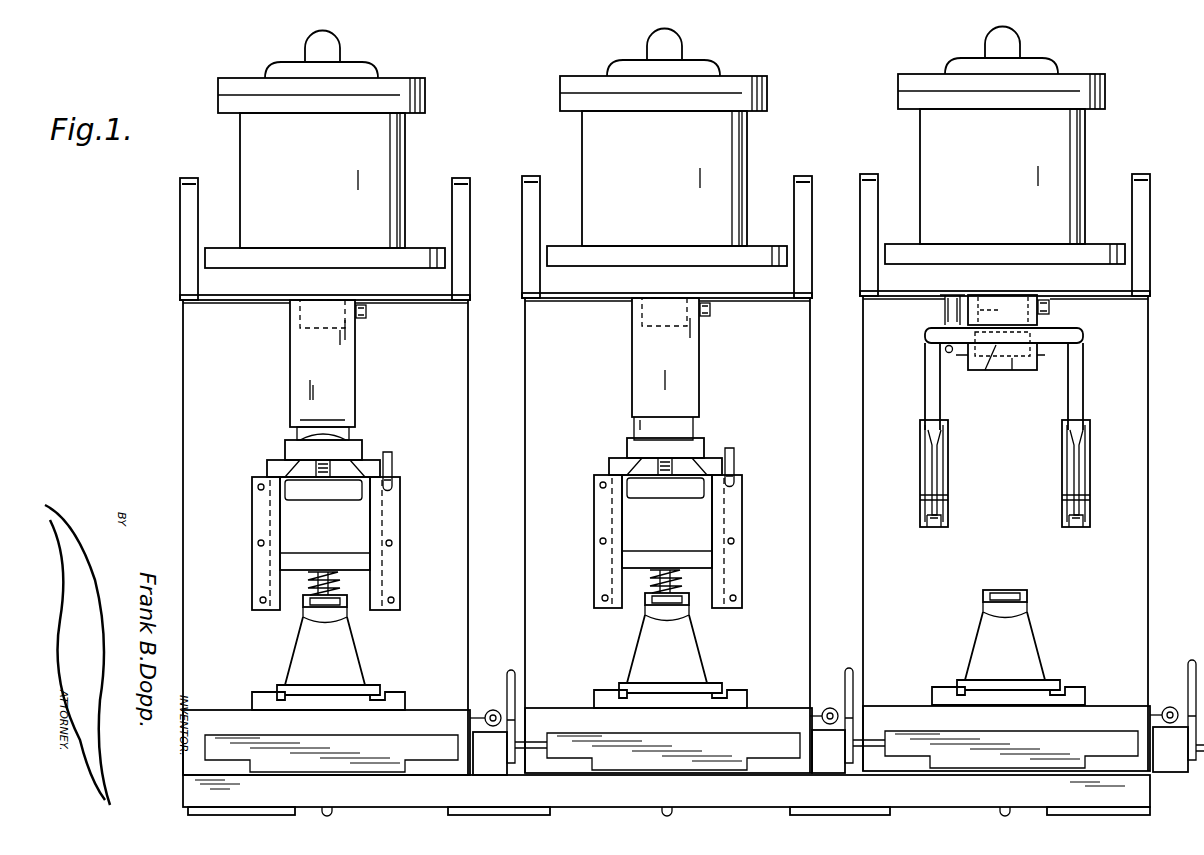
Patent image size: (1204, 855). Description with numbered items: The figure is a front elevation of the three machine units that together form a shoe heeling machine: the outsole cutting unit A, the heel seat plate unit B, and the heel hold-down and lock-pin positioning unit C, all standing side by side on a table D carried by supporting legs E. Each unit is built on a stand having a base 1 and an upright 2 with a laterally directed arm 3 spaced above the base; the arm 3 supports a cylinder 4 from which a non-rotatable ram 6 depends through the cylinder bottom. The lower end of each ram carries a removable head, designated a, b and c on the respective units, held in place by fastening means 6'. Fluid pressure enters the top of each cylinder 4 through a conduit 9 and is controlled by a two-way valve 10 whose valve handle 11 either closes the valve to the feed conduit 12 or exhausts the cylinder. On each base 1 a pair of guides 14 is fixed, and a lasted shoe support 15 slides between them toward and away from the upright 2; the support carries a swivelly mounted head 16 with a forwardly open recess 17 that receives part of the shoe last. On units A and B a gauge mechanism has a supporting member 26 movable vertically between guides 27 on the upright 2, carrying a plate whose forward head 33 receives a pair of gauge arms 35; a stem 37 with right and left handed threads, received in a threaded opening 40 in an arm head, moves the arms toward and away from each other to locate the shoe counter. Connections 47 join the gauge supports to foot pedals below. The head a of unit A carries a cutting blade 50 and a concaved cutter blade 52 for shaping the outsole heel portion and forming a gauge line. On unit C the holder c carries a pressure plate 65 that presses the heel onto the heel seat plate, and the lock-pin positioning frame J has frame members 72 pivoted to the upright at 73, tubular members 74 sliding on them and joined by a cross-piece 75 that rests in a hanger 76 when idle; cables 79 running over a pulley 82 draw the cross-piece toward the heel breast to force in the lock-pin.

The base 1 is at (207, 718).
The upright 2 is at (665, 474).
The laterally directed arm 3 is at (665, 267).
The cylinder 4 is at (240, 143).
The ram 6 is at (665, 282).
The fastening means 6' is at (713, 317).
The conduit 9 is at (485, 712).
The two-way valve 10 is at (830, 751).
The valve handle 11 is at (511, 670).
The feed conduit 12 is at (547, 746).
The guides 14 is at (260, 700).
The lasted shoe support 15 is at (665, 648).
The head 16 is at (305, 615).
The recess 17 is at (347, 605).
The supporting member 26 is at (496, 522).
The guides 27 is at (255, 548).
The head 33 is at (363, 450).
The gauge arms 35 is at (277, 468).
The stem 37 is at (393, 470).
The screw threaded opening 40 is at (340, 577).
The connections 47 is at (337, 588).
The cutting blade 50 is at (297, 432).
The concaved cutter blade 52 is at (333, 438).
The pressure plate 65 is at (1013, 370).
The frame members 72 is at (1070, 452).
The pivot 73 is at (1062, 495).
The tubular members 74 is at (1070, 406).
The cross-piece 75 is at (996, 345).
The hanger 76 is at (945, 349).
The cables 79 is at (1073, 473).
The pulley 82 is at (1062, 521).
The removable head a is at (292, 377).
The removable head b is at (632, 375).
The holder c is at (968, 312).
The outsole cutting unit A is at (174, 381).
The heel seat plate unit B is at (516, 381).
The heel hold-down and lock-pin positioning unit C is at (854, 381).
The table D is at (666, 791).
The supporting legs E is at (278, 812).
The telescopic frame J is at (926, 393).